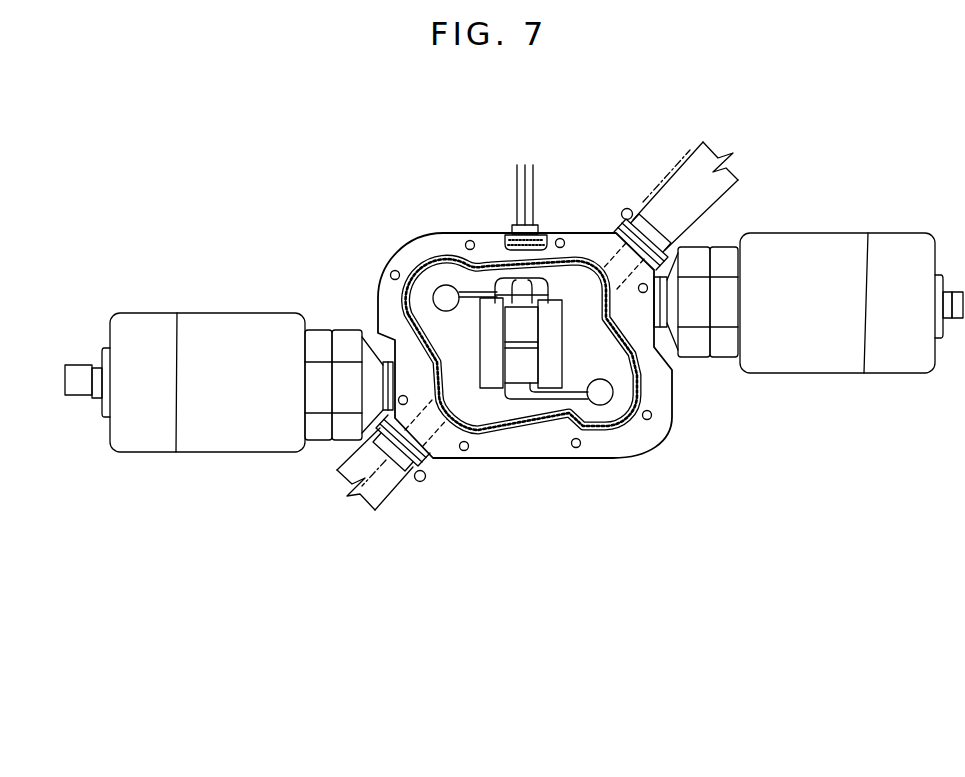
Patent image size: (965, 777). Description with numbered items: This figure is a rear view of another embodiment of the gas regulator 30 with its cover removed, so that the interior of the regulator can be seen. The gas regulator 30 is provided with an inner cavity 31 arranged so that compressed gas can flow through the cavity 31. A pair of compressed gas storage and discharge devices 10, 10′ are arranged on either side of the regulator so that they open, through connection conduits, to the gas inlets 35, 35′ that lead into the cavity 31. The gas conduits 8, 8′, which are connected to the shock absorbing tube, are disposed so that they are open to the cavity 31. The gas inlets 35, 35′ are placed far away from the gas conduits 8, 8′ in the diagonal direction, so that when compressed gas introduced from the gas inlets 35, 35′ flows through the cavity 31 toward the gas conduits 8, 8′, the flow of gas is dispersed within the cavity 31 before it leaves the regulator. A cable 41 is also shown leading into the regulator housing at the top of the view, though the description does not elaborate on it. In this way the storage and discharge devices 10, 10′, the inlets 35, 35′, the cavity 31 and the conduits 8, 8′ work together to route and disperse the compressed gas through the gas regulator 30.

The gas regulator 30 is at (413, 248).
The inner cavity 31 is at (425, 316).
The gas inlet 35 is at (603, 400).
The gas inlet 35′ is at (443, 290).
The electrical cable 41 is at (533, 192).
The compressed gas storage and discharge device 10 is at (252, 323).
The compressed gas storage and discharge device 10′ is at (790, 250).
The gas conduit 8 is at (392, 488).
The gas conduit 8′ is at (678, 175).